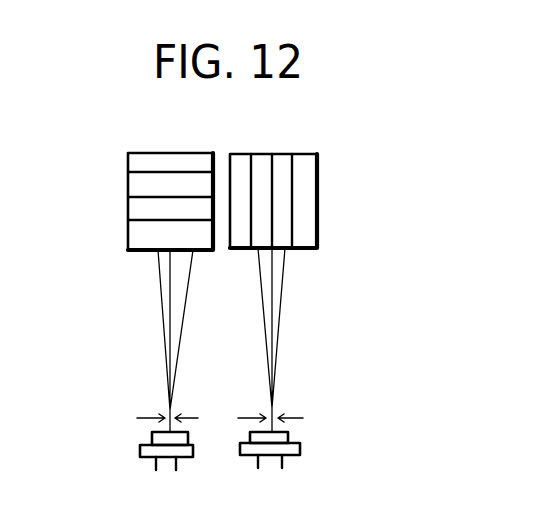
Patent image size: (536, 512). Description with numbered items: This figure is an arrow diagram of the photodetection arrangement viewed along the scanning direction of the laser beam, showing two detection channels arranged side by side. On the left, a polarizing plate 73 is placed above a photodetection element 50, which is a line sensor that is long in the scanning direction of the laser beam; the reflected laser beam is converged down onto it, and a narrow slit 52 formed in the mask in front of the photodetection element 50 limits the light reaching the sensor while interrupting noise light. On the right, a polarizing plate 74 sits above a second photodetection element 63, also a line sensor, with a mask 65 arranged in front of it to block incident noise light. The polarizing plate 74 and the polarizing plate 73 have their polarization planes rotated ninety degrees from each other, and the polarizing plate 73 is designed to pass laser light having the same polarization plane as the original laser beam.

The polarizing plate 73 is at (137, 231).
The polarizing plate 74 is at (308, 187).
The slit 52 is at (143, 417).
The mask 65 is at (303, 418).
The photodetection element 50 is at (148, 456).
The photodetection element 63 is at (300, 447).